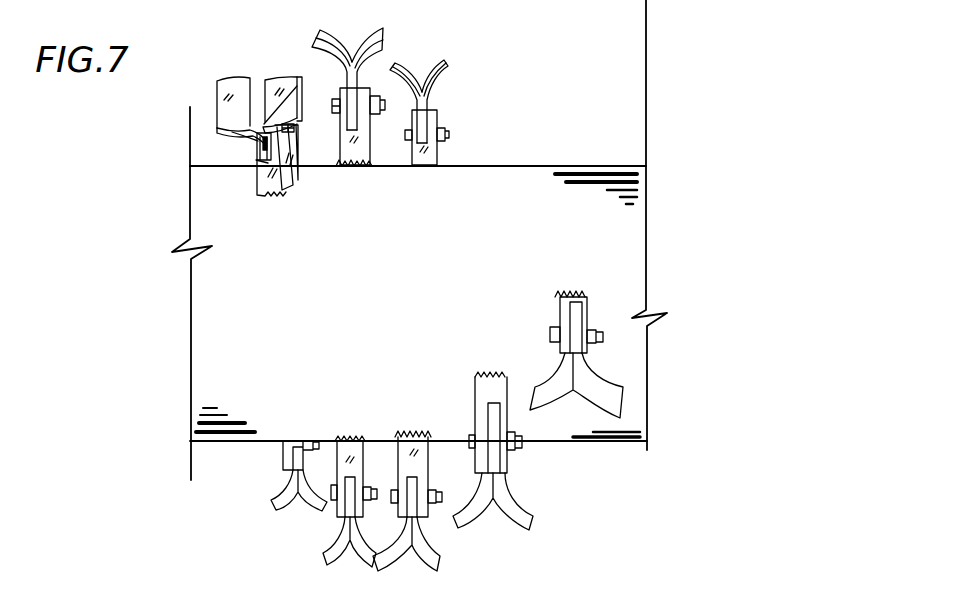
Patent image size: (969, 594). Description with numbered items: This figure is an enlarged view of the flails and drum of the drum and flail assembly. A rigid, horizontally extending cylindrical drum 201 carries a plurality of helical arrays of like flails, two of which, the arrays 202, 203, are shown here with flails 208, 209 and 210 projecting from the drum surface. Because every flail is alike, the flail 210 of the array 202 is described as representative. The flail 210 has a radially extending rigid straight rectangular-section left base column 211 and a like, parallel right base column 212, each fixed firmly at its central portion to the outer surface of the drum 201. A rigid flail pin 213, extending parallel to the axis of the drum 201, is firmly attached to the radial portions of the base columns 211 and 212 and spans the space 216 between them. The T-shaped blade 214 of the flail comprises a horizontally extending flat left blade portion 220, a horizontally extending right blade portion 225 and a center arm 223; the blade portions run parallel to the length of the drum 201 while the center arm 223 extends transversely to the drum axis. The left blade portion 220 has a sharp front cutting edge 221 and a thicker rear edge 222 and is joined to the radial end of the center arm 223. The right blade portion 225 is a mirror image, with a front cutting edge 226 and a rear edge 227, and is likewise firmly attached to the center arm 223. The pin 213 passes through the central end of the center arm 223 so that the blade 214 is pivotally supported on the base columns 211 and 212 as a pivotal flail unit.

The cylindrical drum 201 is at (198, 325).
The helical array of flails 202 is at (232, 277).
The helical array of flails 203 is at (588, 272).
The flail 208 is at (420, 166).
The flail 209 is at (330, 106).
The flail 210 is at (327, 217).
The left base column 211 is at (260, 190).
The right base column 212 is at (272, 187).
The flail pin 213 is at (289, 131).
The T-shaped blade 214 is at (153, 197).
The space between base columns 216 is at (265, 165).
The left blade portion 220 is at (213, 93).
The front cutting edge 221 is at (250, 85).
The rear edge 222 is at (232, 132).
The center arm 223 is at (268, 163).
The right blade portion 225 is at (322, 33).
The front cutting edge 226 is at (272, 86).
The rear edge 227 is at (292, 96).